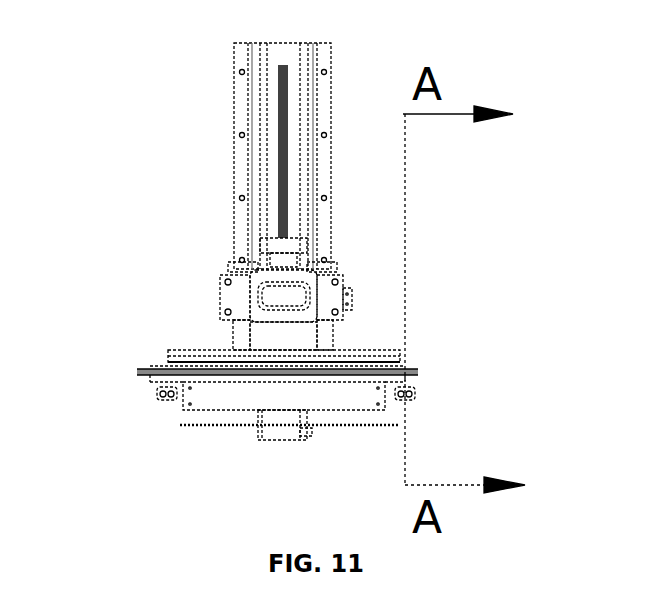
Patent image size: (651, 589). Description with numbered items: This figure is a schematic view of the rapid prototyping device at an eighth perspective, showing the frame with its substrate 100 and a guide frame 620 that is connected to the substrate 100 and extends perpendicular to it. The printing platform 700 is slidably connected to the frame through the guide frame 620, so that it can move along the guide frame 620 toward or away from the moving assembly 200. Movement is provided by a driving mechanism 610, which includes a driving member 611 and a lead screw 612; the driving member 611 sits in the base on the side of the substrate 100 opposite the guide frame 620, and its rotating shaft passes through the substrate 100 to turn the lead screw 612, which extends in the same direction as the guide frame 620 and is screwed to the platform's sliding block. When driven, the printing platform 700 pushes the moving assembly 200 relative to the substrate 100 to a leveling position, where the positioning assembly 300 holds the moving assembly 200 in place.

The guide frame 620 is at (323, 108).
The lead screw 612 is at (285, 200).
The driving member 611 is at (290, 425).
The driving mechanism 610 is at (383, 254).
The printing platform 700 is at (260, 338).
The moving assembly 200 is at (167, 363).
The substrate 100 is at (163, 379).
The positioning assembly 300 is at (162, 397).